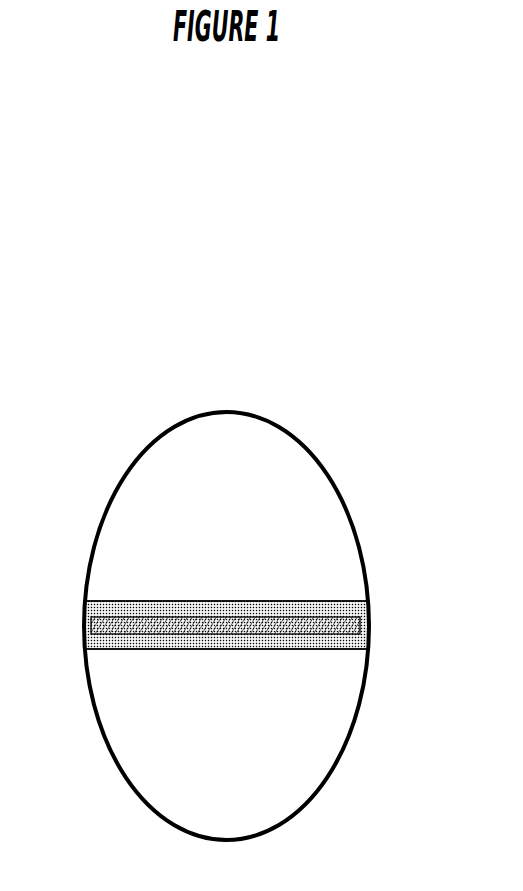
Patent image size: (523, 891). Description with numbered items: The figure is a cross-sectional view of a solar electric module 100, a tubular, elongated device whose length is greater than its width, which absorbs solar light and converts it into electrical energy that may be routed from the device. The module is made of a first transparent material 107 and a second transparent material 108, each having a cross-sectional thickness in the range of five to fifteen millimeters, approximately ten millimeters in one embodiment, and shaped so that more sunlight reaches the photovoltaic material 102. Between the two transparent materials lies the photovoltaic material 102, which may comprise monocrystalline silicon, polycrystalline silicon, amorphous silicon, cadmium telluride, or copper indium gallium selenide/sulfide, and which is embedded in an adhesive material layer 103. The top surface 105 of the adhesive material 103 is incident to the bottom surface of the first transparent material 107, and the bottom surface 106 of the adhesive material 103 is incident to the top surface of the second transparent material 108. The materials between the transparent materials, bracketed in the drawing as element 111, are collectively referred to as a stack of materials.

The solar electric module 100 is at (104, 314).
The photovoltaic material 102 is at (345, 621).
The adhesive material layer 103 is at (311, 650).
The top surface 105 is at (128, 593).
The bottom surface 106 is at (143, 658).
The first transparent material 107 is at (243, 538).
The second transparent material 108 is at (243, 741).
The layer stack 111 is at (79, 600).